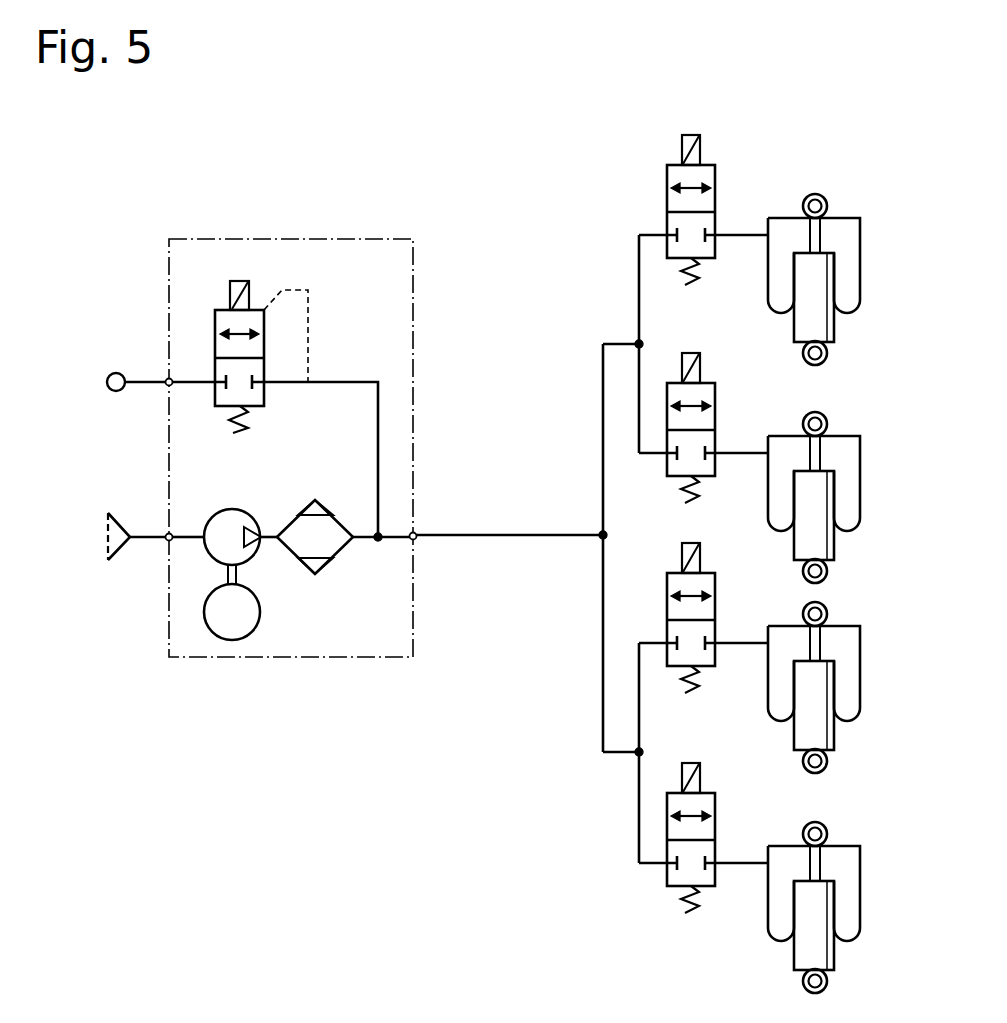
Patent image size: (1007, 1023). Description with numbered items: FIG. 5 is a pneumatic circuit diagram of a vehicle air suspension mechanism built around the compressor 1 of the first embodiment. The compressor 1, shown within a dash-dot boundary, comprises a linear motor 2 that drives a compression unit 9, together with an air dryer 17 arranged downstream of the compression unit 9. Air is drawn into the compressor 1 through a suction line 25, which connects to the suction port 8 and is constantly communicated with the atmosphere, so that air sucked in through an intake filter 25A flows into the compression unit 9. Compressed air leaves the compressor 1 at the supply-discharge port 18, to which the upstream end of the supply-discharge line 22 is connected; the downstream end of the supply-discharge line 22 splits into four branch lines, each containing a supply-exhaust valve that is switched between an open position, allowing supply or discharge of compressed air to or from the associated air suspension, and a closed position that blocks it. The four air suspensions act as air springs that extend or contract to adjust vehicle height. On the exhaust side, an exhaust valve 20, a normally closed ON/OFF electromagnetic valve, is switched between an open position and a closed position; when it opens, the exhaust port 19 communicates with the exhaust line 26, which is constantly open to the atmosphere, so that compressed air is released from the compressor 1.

The compressor 1 is at (278, 237).
The linear motor 2 is at (262, 612).
The suction port 8 is at (166, 534).
The compression unit 9 is at (223, 508).
The air dryer 17 is at (337, 517).
The supply-discharge port 18 is at (417, 541).
The exhaust port 19 is at (166, 386).
The exhaust valve 20 is at (223, 310).
The supply-discharge line 22 is at (515, 533).
The suction line 25 is at (150, 542).
The intake filter 25A is at (113, 559).
The exhaust line 26 is at (147, 380).